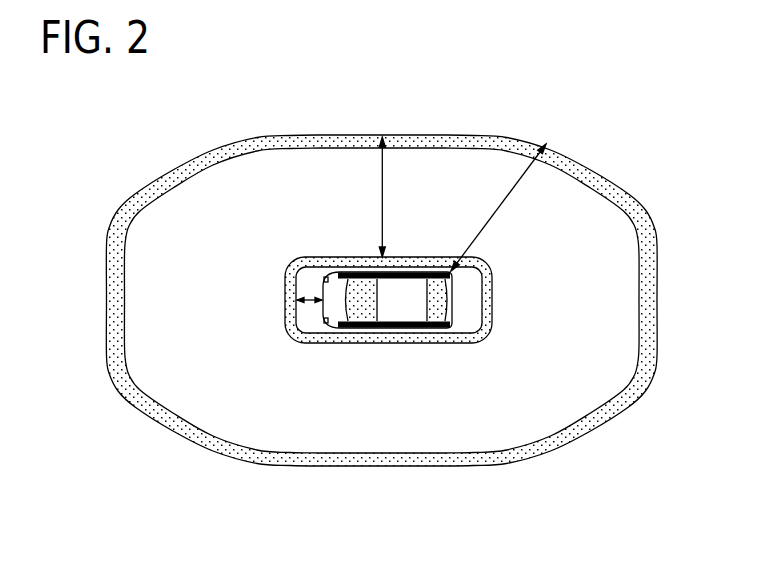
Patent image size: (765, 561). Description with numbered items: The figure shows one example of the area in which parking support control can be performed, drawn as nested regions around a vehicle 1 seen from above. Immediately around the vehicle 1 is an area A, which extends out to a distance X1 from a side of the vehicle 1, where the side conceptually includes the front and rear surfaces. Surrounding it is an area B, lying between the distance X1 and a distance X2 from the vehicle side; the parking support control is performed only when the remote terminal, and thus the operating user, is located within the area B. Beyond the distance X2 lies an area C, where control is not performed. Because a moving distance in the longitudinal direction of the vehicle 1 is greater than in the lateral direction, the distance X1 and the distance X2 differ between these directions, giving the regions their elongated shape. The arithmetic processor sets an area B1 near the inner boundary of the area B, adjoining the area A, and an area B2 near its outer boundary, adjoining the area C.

The vehicle 1 is at (453, 297).
The area A is at (462, 322).
The area B is at (443, 216).
The area B1 is at (287, 341).
The area B2 is at (662, 148).
The area C is at (410, 98).
The distance X1 is at (309, 310).
The distance X2 is at (498, 207).